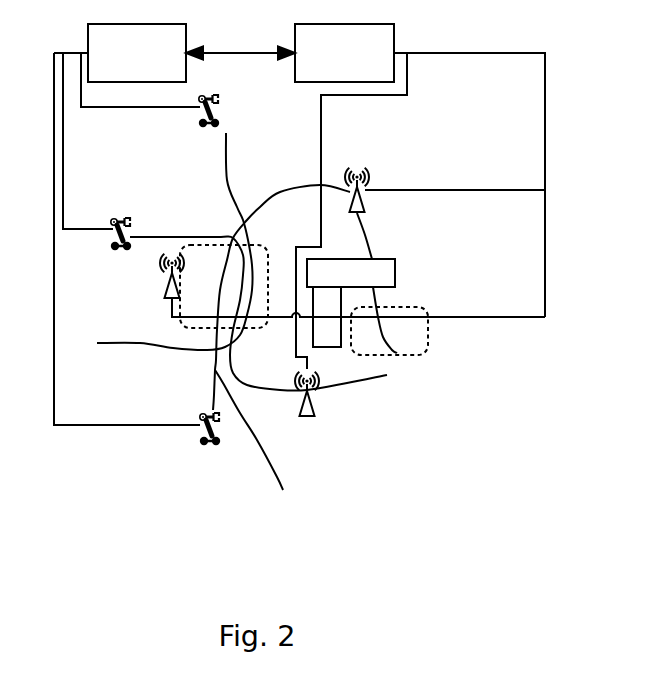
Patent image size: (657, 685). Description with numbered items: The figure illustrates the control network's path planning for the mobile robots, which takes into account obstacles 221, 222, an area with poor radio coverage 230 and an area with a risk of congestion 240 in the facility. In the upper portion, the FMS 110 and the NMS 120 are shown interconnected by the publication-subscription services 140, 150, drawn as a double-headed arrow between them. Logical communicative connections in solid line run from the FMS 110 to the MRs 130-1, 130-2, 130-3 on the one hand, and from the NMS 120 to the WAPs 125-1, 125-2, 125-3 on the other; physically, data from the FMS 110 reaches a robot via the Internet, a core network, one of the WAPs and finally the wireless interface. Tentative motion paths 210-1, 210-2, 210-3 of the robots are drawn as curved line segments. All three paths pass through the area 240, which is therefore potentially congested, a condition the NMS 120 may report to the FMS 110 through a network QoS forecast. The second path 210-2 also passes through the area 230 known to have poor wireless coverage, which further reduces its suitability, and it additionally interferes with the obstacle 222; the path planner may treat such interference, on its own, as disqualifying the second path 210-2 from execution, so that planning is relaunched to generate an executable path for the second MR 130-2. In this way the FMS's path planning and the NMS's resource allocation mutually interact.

The FMS 110 is at (137, 53).
The NMS 120 is at (344, 53).
The publication-subscription service 140 is at (240, 38).
The publication-subscription service 150 is at (240, 38).
The WAP 125-1 is at (158, 268).
The WAP 125-2 is at (309, 419).
The WAP 125-3 is at (357, 165).
The MR 130-1 is at (115, 218).
The second MR 130-2 is at (204, 448).
The MR 130-3 is at (200, 111).
The path 210-1 is at (167, 236).
The second path 210-2 is at (274, 446).
The path 210-3 is at (230, 182).
The obstacle 222 is at (351, 273).
The obstacle 221 is at (341, 347).
The area with poor radio coverage 230 is at (428, 333).
The area with a risk of congestion 240 is at (188, 330).